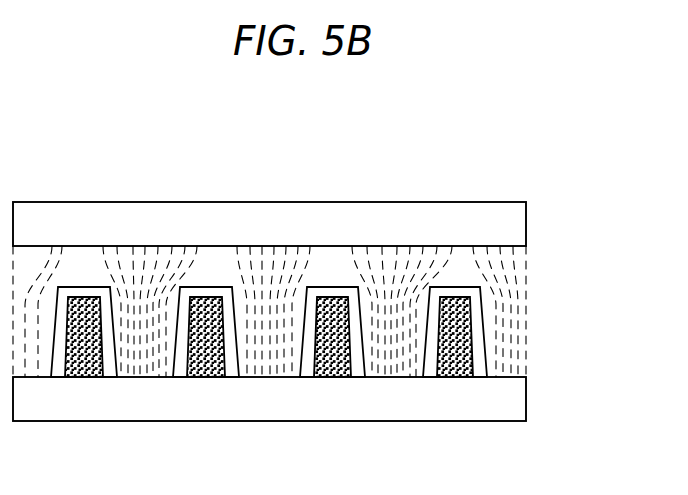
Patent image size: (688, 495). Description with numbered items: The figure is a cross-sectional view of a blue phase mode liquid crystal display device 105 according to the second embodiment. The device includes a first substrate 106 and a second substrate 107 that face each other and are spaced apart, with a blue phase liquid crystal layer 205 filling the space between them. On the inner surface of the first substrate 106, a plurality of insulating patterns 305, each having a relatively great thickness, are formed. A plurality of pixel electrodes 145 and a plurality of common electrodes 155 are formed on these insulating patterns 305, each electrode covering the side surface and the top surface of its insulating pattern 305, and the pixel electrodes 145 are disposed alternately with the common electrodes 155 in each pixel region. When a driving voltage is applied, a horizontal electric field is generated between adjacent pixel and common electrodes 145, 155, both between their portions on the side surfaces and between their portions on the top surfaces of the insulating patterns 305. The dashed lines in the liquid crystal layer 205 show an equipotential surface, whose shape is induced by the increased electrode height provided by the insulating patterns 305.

The blue phase mode liquid crystal display device 105 is at (509, 180).
The second substrate 107 is at (508, 223).
The first substrate 106 is at (508, 400).
The blue phase liquid crystal layer 205 is at (508, 294).
The pixel electrode 145 is at (82, 293).
The common electrode 155 is at (207, 293).
The insulating pattern 305 is at (462, 340).